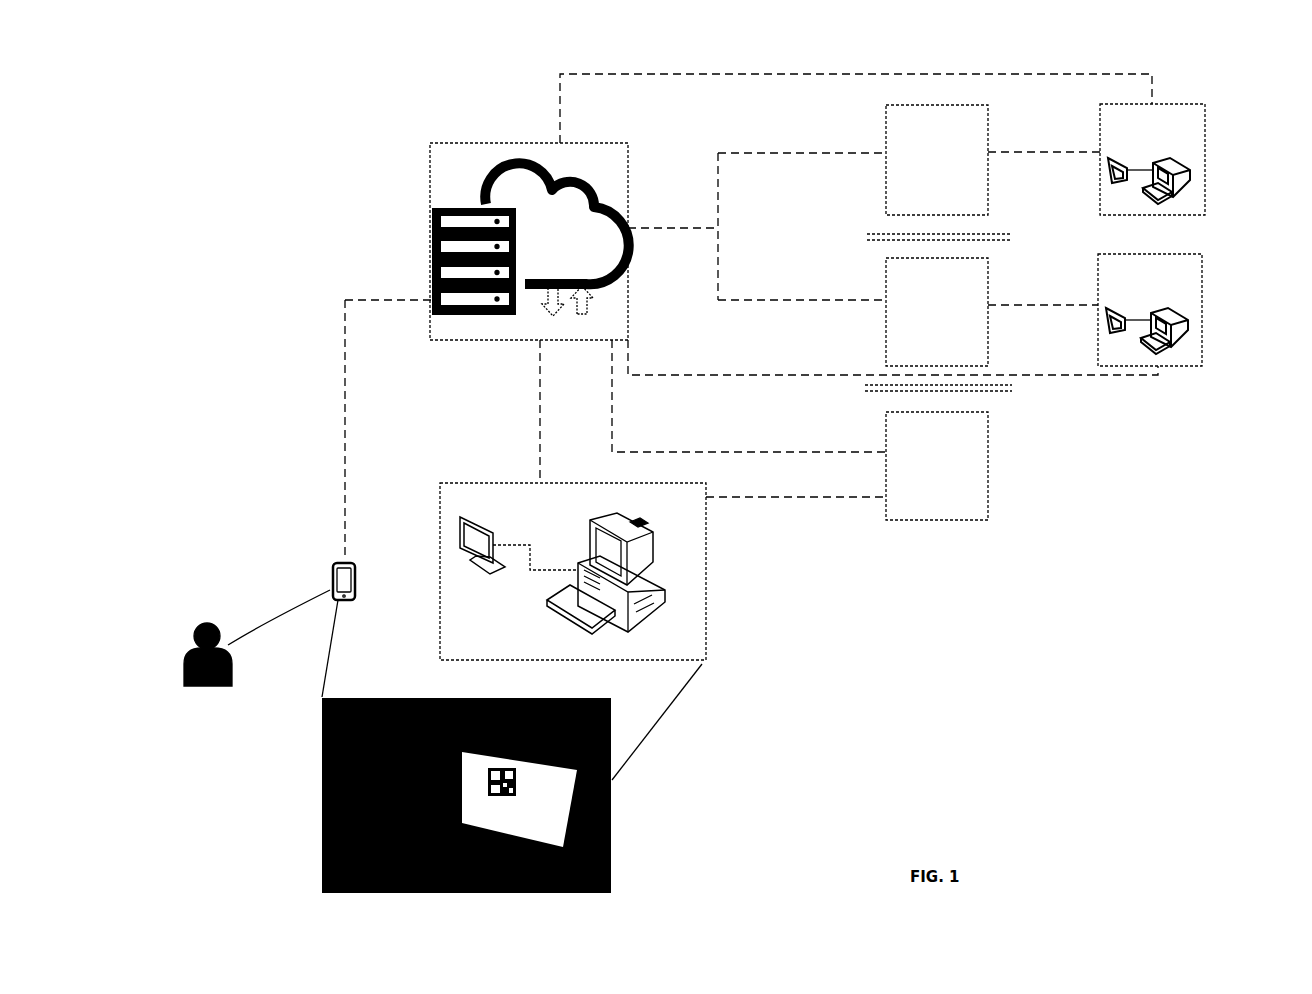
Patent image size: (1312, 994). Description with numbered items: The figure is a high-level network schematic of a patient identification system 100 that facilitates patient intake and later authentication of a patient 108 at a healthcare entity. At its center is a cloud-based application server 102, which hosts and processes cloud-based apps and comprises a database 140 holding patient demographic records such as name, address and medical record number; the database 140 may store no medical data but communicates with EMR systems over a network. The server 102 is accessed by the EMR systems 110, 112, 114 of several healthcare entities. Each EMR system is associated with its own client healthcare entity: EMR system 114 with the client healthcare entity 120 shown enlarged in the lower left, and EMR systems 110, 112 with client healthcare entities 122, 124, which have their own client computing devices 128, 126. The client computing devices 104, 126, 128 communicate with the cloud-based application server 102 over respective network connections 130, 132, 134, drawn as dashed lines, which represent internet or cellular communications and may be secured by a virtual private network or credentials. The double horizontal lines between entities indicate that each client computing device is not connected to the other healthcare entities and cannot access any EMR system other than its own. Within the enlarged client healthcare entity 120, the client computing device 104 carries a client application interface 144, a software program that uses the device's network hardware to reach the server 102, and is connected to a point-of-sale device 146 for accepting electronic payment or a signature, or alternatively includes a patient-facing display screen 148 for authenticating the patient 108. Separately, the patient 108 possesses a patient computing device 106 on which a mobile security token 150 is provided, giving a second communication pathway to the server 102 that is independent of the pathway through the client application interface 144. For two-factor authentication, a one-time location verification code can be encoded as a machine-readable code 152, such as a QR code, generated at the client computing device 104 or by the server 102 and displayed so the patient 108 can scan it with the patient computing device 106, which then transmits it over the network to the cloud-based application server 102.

The patient identification system 100 is at (288, 80).
The cloud-based application server 102 is at (430, 176).
The client computing device 104 is at (625, 580).
The patient computing device 106 is at (332, 568).
The patient 108 is at (197, 624).
The EMR system 110 is at (886, 188).
The EMR system 112 is at (886, 322).
The EMR system 114 is at (928, 521).
The client healthcare entity 120 is at (710, 598).
The client healthcare entity 122 is at (1186, 159).
The client healthcare entity 124 is at (1185, 312).
The client computing device 126 is at (1157, 306).
The client computing device 128 is at (1158, 152).
The network connection 130 is at (538, 402).
The network connection 132 is at (1150, 378).
The network connection 134 is at (1072, 75).
The database 140 is at (431, 245).
The client application interface 144 is at (625, 550).
The point-of-sale device 146 is at (519, 580).
The patient-facing display screen 148 is at (488, 576).
The mobile security token 150 is at (512, 778).
The machine-readable code 152 is at (506, 786).